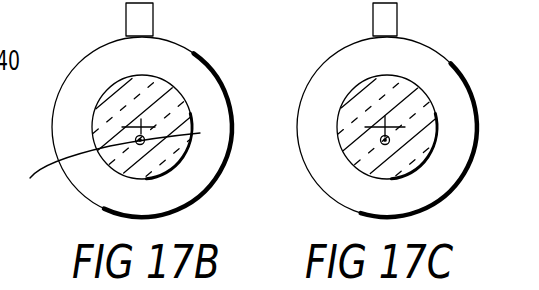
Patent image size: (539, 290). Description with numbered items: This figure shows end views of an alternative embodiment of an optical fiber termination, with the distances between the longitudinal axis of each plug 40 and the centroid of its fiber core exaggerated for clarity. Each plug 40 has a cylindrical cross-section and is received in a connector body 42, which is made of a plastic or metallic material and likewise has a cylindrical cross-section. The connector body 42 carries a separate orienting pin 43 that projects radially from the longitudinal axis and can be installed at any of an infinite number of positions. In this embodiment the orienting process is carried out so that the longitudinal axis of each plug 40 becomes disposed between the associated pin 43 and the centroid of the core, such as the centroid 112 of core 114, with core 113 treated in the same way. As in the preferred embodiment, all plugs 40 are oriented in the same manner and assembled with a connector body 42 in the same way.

In FIG. 17B, the plug 40 is at (172, 88).
In FIG. 17C, the plug 40 is at (417, 87).
In FIG. 17B, the connector body 42 is at (193, 52).
In FIG. 17C, the connector body 42 is at (427, 44).
In FIG. 17B, the orienting pin 43 is at (134, 13).
In FIG. 17C, the orienting pin 43 is at (382, 13).
In FIG. 17B, the centroid 112 is at (200, 133).
In FIG. 17C, the core 113 is at (389, 141).
In FIG. 17B, the core 114 is at (103, 172).
In FIG. 17C, the core 114 is at (381, 140).